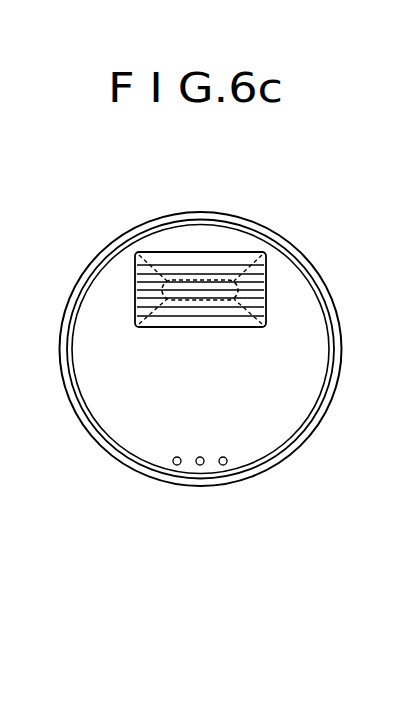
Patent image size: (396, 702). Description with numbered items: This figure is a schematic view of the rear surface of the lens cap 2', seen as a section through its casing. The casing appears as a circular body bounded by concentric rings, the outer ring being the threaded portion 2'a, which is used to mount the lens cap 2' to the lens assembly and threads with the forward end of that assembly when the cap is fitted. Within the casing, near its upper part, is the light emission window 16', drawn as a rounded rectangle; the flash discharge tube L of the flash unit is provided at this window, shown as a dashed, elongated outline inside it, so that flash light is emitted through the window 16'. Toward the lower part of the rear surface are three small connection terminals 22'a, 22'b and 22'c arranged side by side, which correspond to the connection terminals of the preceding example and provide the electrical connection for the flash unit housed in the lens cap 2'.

The lens cap 2' is at (207, 343).
The threaded portion 2'a is at (201, 363).
The light emission window 16' is at (203, 315).
The flash discharge tube L is at (191, 298).
The connection terminal 22'a is at (153, 435).
The connection terminal 22'b is at (203, 435).
The connection terminal 22'c is at (245, 435).